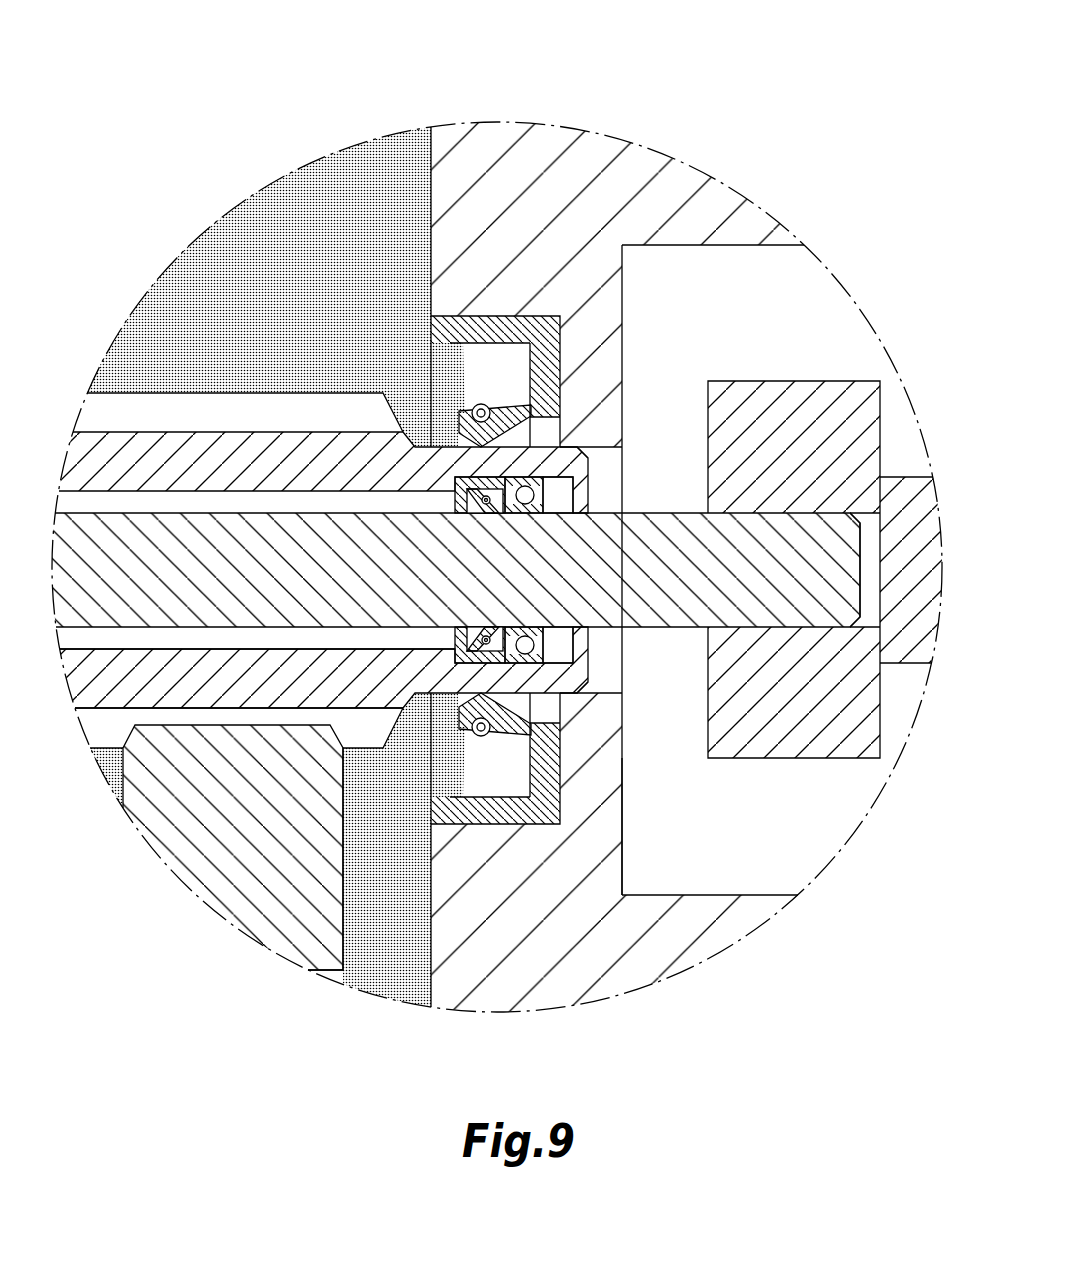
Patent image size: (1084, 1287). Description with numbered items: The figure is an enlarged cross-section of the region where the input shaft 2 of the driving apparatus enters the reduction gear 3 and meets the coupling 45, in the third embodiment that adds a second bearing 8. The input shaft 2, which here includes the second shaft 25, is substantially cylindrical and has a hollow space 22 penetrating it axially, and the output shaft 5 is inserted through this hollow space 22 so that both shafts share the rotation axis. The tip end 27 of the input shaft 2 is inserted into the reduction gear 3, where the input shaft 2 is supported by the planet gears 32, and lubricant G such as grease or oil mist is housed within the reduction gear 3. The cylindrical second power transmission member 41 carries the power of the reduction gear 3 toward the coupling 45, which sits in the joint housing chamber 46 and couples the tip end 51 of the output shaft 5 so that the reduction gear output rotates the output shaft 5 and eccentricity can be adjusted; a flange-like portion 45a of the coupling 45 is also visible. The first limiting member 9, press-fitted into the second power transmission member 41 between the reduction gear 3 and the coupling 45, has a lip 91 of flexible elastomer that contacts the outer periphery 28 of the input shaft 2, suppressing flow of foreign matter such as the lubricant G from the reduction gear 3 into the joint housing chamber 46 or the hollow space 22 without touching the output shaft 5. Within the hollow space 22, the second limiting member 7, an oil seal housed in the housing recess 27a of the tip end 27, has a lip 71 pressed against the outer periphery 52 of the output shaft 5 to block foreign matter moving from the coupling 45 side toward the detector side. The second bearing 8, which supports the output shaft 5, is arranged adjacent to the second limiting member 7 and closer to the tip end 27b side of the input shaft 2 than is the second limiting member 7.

The input shaft 2 is at (173, 683).
The reduction gear 3 is at (297, 907).
The output shaft 5 is at (162, 570).
The second limiting member 7 is at (483, 660).
The second bearing 8 is at (527, 645).
The first limiting member 9 is at (495, 330).
The hollow space 22 is at (147, 633).
The second shaft 25 is at (223, 680).
The tip end of the input shaft 27 is at (568, 686).
The housing recess 27a is at (576, 447).
The tip end of the input shaft 27b is at (588, 680).
The outer periphery of the input shaft 28 is at (437, 433).
The planet gears 32 is at (240, 867).
The second power transmission member 41 is at (597, 200).
The coupling 45 is at (798, 723).
The cover flange 45a is at (873, 608).
The joint housing chamber 46 is at (747, 850).
The tip end of the output shaft 51 is at (787, 556).
The outer periphery of the output shaft 52 is at (564, 510).
The lip 71 is at (490, 632).
The lip 91 is at (462, 430).
The lubricant G is at (385, 917).